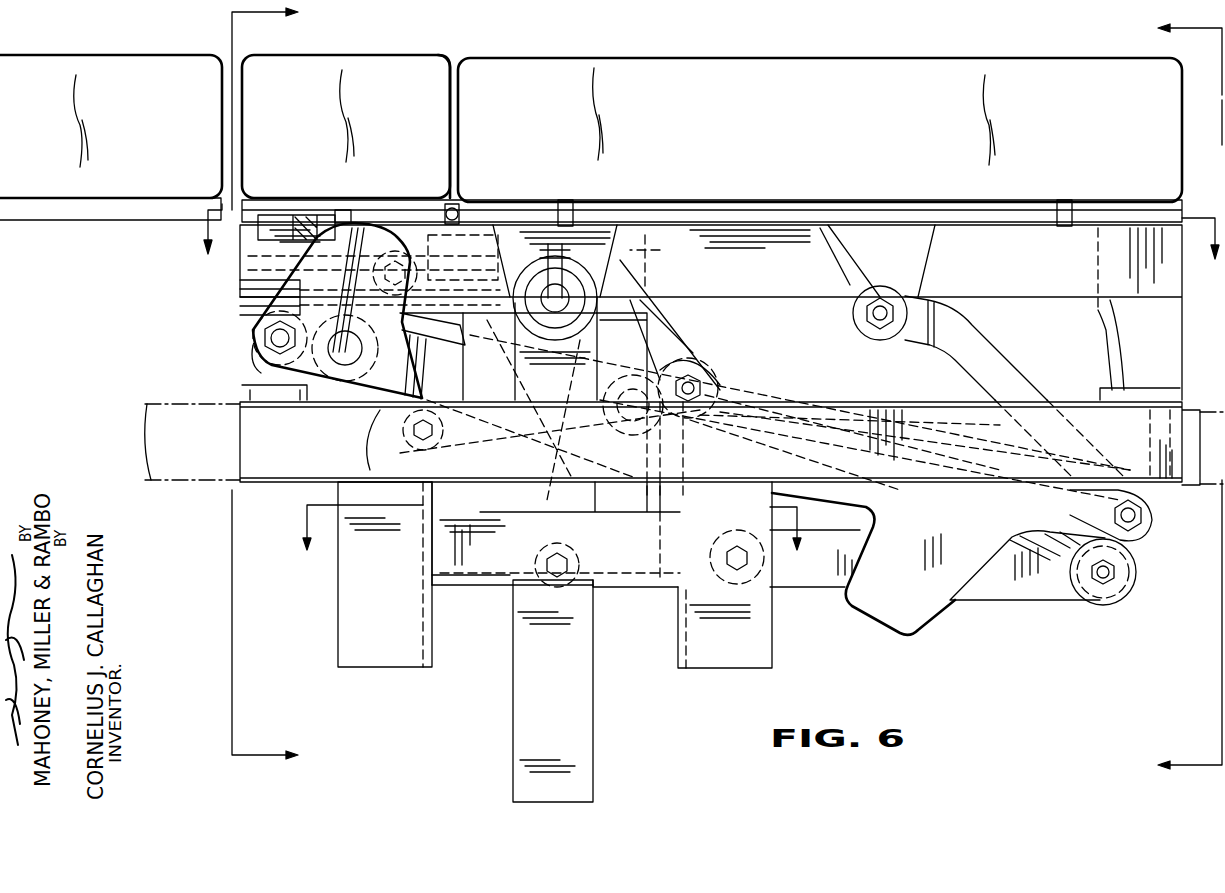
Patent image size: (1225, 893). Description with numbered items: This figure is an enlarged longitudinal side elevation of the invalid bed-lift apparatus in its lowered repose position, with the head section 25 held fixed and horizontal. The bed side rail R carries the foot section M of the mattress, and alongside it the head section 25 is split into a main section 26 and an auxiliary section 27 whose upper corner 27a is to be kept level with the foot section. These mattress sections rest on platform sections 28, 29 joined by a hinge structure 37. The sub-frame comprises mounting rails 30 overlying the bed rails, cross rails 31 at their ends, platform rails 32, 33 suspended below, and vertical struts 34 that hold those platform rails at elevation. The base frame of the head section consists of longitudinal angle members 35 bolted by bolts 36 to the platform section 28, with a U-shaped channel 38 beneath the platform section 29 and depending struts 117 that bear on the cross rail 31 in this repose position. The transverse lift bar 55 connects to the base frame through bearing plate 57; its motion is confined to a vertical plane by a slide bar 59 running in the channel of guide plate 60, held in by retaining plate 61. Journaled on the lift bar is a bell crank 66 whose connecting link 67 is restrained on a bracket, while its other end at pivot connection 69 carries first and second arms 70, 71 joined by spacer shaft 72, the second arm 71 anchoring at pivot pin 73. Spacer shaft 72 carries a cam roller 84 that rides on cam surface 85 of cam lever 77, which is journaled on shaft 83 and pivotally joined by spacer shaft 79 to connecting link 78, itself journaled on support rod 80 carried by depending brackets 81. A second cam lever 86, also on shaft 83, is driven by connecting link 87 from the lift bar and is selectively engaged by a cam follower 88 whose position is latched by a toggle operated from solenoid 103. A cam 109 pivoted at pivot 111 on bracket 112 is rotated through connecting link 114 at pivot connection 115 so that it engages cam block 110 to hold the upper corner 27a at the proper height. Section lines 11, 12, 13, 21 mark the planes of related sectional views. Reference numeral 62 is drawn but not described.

The first mattress portion M is at (158, 51).
The second mattress portion 25 is at (859, 45).
The main section 26 is at (961, 62).
The auxiliary section 27 is at (374, 64).
The upper corner 27a is at (250, 64).
The platform section 28 is at (996, 214).
The platform section 29 is at (384, 214).
The mounting rail 30 is at (291, 479).
The cross rail 31 is at (240, 391).
The platform rail 32 is at (674, 675).
The platform rail 33 is at (435, 652).
The strut 34 is at (376, 657).
The angle member 35 is at (990, 272).
The bolt 36 is at (570, 218).
The hinge structure 37 is at (452, 210).
The U-shaped channel 38 is at (234, 291).
The lift bar 55 is at (545, 258).
The bearing plate 57 is at (633, 242).
The slide bar 59 is at (593, 729).
The guide plate 60 is at (450, 494).
The retaining plate 61 is at (437, 554).
The pivot bearing 62 is at (557, 282).
The bell crank 66 is at (680, 350).
The connecting link 67 is at (506, 526).
The pivot connection 69 is at (693, 382).
The first arm 70 is at (800, 385).
The second arm 71 is at (1032, 602).
The spacer shaft 72 is at (1111, 576).
The pivot pin 73 is at (734, 574).
The cam lever 77 is at (916, 610).
The connecting link 78 is at (974, 345).
The spacer shaft 79 is at (1138, 522).
The support rod 80 is at (857, 315).
The depending bracket 81 is at (833, 264).
The shaft 83 is at (621, 442).
The cam roller 84 is at (1134, 564).
The cam surface 85 is at (964, 587).
The cam lever 86 is at (320, 438).
The connecting link 87 is at (458, 346).
The cam follower 88 is at (342, 402).
The solenoid 103 is at (648, 262).
The cam 109 is at (322, 257).
The cam block 110 is at (257, 239).
The pivot 111 is at (253, 328).
The bracket 112 is at (253, 358).
The connecting link 114 is at (628, 288).
The pivot connection 115 is at (683, 454).
The depending strut 117 is at (1112, 332).
The side rail R is at (176, 402).
The section line 11- 11 is at (706, 246).
The section line 12- 12 is at (283, 386).
The section line 13- 13 is at (1165, 398).
The section line 21- 21 is at (548, 541).